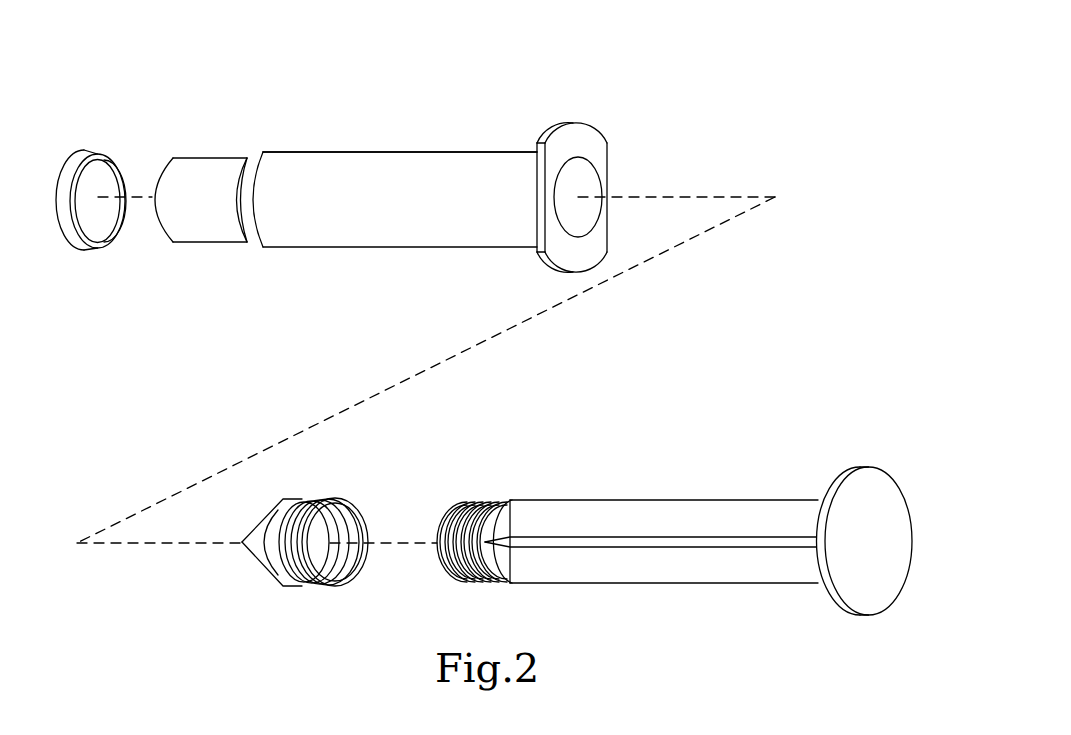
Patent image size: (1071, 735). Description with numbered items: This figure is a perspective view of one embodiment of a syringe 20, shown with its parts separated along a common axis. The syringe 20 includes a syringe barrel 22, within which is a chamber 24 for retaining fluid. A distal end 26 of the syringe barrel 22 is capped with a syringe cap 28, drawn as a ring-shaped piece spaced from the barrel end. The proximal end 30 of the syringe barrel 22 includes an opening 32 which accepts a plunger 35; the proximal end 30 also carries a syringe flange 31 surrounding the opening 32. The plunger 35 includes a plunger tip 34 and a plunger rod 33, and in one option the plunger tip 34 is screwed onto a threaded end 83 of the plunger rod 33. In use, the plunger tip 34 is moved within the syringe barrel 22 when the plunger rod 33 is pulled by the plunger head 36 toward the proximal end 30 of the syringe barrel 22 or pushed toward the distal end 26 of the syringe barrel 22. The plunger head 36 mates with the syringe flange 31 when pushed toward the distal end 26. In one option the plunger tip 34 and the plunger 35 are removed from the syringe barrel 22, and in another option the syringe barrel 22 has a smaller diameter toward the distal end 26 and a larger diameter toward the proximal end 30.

The syringe 20 is at (658, 49).
The syringe barrel 22 is at (395, 176).
The chamber 24 is at (332, 156).
The distal end 26 is at (178, 157).
The syringe cap 28 is at (67, 235).
The proximal end 30 is at (601, 180).
The syringe flange 31 is at (578, 137).
The opening 32 is at (581, 186).
The plunger rod 33 is at (622, 584).
The plunger tip 34 is at (255, 562).
The plunger 35 is at (698, 447).
The plunger head 36 is at (894, 480).
The threaded end 83 is at (480, 504).